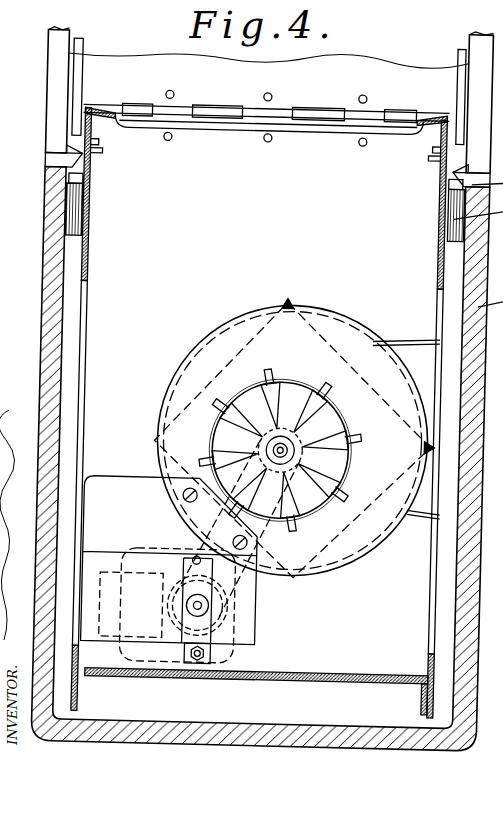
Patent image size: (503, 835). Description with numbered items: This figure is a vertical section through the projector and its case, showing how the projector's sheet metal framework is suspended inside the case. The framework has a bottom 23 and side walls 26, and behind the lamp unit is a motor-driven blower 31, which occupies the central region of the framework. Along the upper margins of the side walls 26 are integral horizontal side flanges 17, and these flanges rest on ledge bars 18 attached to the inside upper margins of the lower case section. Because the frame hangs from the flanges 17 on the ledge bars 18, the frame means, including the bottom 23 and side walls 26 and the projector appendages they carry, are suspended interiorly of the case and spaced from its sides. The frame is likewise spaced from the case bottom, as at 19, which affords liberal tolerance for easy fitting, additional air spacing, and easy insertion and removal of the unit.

The horizontal side flange 17 is at (44, 177).
The ledge bar 18 is at (67, 216).
The bottom spacing 19 is at (423, 710).
The bottom 23 is at (278, 672).
The side wall 26 is at (81, 281).
The motor-driven blower 31 is at (258, 405).